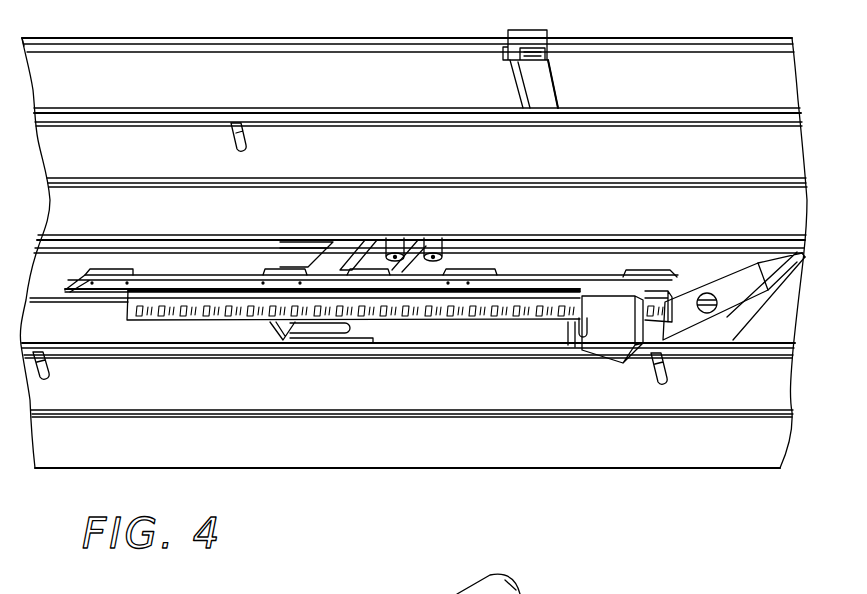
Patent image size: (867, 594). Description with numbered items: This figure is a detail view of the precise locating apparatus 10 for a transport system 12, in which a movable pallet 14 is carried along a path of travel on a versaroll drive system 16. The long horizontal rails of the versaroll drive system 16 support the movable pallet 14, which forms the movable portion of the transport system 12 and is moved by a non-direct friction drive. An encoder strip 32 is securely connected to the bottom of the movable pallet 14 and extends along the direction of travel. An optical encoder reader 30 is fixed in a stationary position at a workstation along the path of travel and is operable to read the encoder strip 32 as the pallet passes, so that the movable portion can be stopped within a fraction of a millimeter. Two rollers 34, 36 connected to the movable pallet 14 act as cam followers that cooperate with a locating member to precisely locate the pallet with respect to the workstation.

The precise locating apparatus 10 is at (541, 372).
The transport system 12 is at (266, 32).
The movable pallet 14 is at (50, 282).
The versaroll drive system 16 is at (643, 443).
The optical encoder reader 30 is at (610, 362).
The encoder strip 32 is at (478, 322).
The roller 34 is at (398, 237).
The roller 36 is at (433, 237).